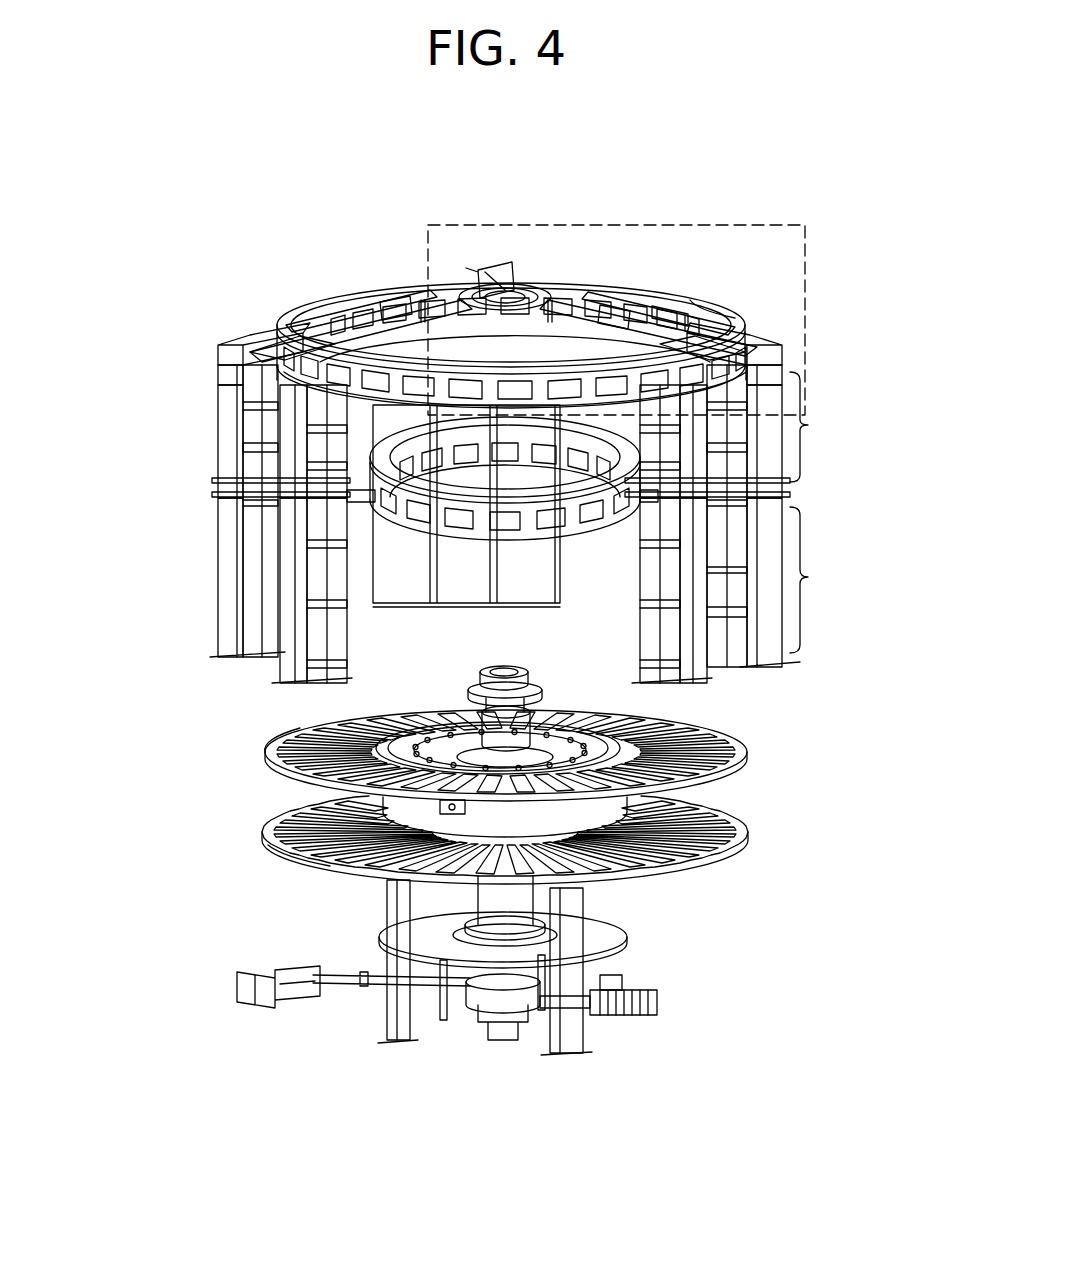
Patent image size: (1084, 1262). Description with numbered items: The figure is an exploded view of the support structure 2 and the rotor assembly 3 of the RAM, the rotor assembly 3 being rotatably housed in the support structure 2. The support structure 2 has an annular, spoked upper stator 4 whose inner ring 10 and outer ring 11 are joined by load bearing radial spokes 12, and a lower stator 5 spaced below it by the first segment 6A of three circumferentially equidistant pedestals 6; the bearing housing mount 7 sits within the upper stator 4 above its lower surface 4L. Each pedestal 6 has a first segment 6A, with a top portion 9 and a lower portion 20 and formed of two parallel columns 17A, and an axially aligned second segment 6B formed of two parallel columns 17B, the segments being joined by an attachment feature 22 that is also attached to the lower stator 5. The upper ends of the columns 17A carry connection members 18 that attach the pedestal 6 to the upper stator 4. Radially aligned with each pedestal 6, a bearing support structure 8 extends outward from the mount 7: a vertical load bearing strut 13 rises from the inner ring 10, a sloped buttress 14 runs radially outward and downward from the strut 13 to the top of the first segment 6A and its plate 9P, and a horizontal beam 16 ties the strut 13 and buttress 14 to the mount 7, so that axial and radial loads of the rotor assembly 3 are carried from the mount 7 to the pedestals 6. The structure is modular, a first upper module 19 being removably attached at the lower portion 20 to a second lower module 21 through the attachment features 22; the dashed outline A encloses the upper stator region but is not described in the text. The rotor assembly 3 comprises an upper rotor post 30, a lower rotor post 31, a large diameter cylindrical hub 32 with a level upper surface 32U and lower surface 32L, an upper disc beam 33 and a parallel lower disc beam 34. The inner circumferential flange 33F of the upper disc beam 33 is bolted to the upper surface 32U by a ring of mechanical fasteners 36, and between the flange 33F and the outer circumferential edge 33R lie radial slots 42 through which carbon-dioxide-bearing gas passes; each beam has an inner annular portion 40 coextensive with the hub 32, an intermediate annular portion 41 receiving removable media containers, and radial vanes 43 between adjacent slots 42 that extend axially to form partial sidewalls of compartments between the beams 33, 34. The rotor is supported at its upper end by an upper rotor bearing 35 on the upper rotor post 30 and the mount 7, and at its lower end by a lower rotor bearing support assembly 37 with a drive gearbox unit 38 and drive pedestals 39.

The support structure 2 is at (880, 385).
The rotor assembly 3 is at (838, 800).
The upper stator 4 is at (312, 300).
The lower surface of the upper stator 4L is at (575, 395).
The lower stator 5 is at (590, 540).
The pedestal 6 is at (205, 517).
The first segment 6A is at (792, 435).
The second segment 6B is at (789, 582).
The bearing housing mount 7 is at (487, 268).
The bearing support structure 8 is at (378, 300).
The top portion 9 is at (205, 390).
The plate 9P is at (268, 338).
The inner ring 10 is at (585, 300).
The outer ring 11 is at (660, 310).
The radial spokes 12 is at (508, 286).
The load bearing strut 13 is at (405, 300).
The load bearing buttress 14 is at (345, 325).
The beam 16 is at (548, 300).
The parallel columns 17A is at (235, 430).
The parallel columns 17B is at (225, 617).
The connection member 18 is at (230, 358).
The first upper module 19 is at (125, 383).
The lower portion 20 is at (235, 462).
The second lower module 21 is at (860, 573).
The attachment feature 22 is at (215, 500).
The upper rotor post 30 is at (540, 720).
The lower rotor post 31 is at (492, 912).
The hub 32 is at (502, 827).
The upper surface 32U is at (445, 750).
The lower surface 32L is at (300, 805).
The upper disc beam 33 is at (524, 722).
The inner circumferential flange 33F is at (395, 755).
The outer circumferential edge 33R is at (290, 742).
The lower disc beam 34 is at (504, 805).
The upper rotor bearing 35 is at (502, 668).
The mechanical fasteners 36 is at (395, 718).
The lower rotor bearing support assembly 37 is at (655, 928).
The drive gearbox unit 38 is at (470, 1008).
The drive pedestals 39 is at (380, 1030).
The inner annular portion 40 is at (597, 745).
The media container receiving annular portion 41 is at (745, 758).
The radial slots 42 is at (660, 735).
The radial vanes 43 is at (365, 873).
The detail region A is at (805, 248).